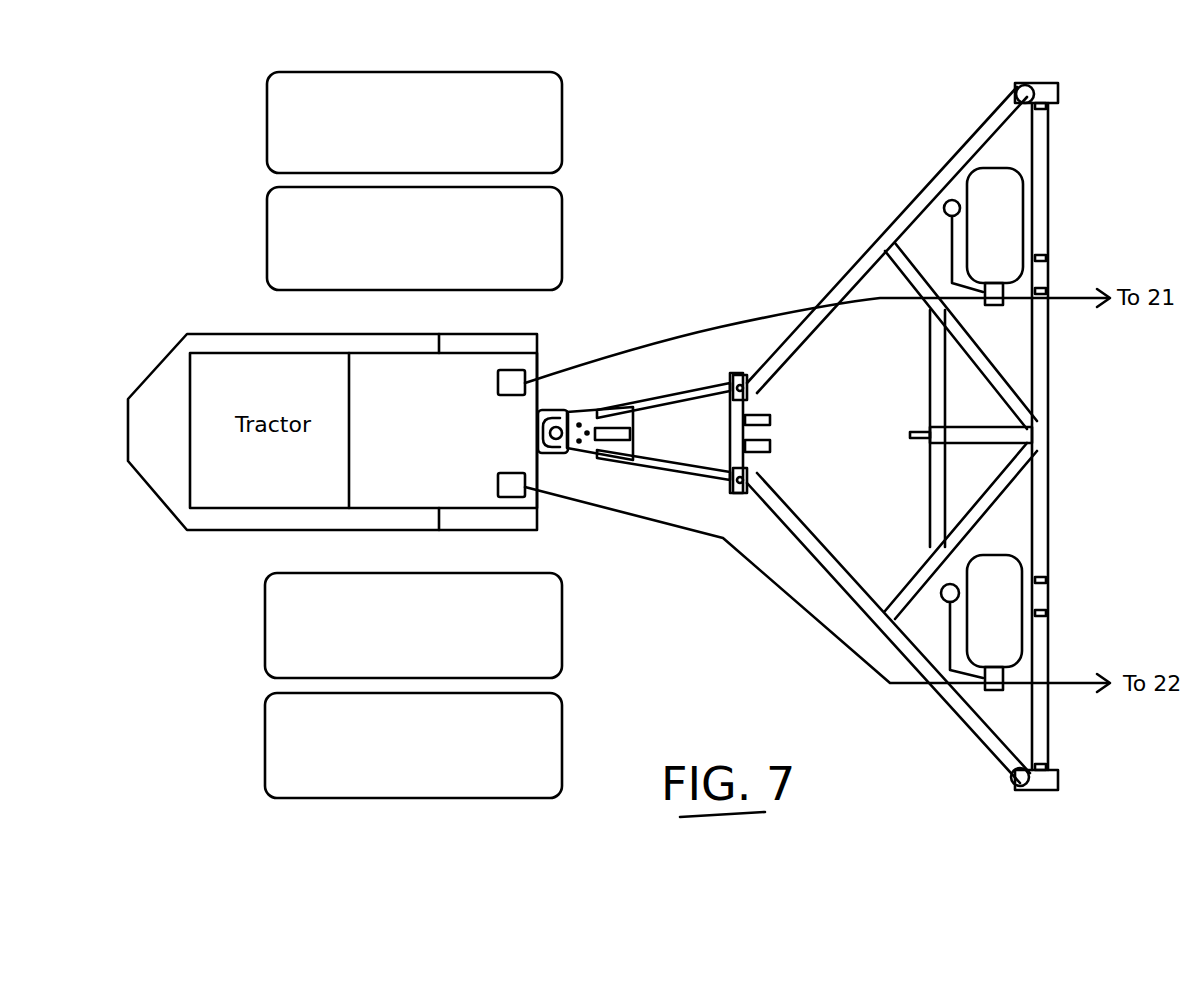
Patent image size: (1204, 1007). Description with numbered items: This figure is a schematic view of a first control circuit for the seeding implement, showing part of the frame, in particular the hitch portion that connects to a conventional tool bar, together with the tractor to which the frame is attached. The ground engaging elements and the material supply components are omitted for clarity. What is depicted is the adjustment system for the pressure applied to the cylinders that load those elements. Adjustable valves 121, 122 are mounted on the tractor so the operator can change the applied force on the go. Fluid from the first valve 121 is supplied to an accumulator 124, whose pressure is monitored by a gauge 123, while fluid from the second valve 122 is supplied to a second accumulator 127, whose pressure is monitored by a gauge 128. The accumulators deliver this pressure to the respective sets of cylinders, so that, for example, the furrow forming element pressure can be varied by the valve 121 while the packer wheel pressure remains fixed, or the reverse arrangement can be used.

The adjustable valve 121 is at (498, 385).
The adjustable valve 122 is at (498, 485).
The gauge 123 is at (945, 205).
The accumulator 124 is at (985, 177).
The accumulator 127 is at (1012, 605).
The gauge 128 is at (957, 584).